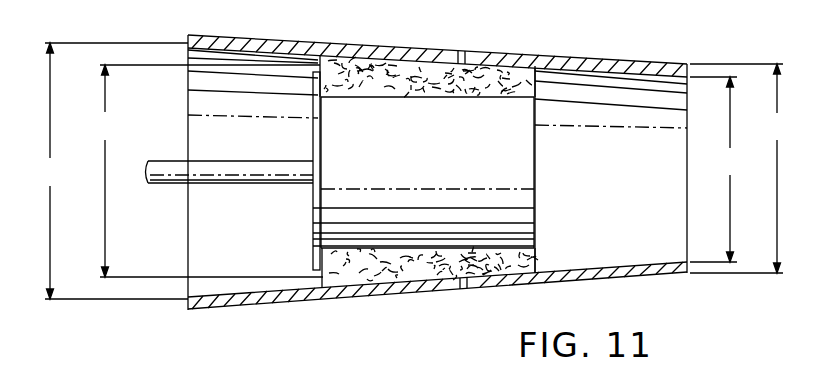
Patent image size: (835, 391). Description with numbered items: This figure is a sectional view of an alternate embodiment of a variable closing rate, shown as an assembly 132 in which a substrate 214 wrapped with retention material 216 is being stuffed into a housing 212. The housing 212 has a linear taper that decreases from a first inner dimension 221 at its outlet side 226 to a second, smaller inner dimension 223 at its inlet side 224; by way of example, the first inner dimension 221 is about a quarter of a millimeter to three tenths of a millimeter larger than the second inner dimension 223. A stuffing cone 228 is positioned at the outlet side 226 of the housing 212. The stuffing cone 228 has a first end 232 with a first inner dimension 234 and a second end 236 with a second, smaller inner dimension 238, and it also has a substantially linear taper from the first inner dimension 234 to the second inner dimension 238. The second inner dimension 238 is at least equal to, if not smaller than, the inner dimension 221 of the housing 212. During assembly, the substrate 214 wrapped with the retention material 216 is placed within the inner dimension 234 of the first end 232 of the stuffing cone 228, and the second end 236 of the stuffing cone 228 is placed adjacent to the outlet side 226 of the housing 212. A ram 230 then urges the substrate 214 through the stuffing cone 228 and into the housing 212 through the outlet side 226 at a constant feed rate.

The assembly 132 is at (88, 0).
The housing 212 is at (550, 59).
The substrate 214 is at (440, 170).
The retention material 216 is at (350, 58).
The first inner dimension 221 is at (743, 168).
The second inner dimension 223 is at (718, 169).
The inlet side 224 is at (695, 274).
The outlet side 226 is at (459, 44).
The stuffing cone 228 is at (337, 297).
The ram 230 is at (230, 178).
The first end 232 is at (188, 310).
The first inner dimension 234 is at (110, 171).
The second end 236 is at (452, 288).
The second inner dimension 238 is at (205, 171).